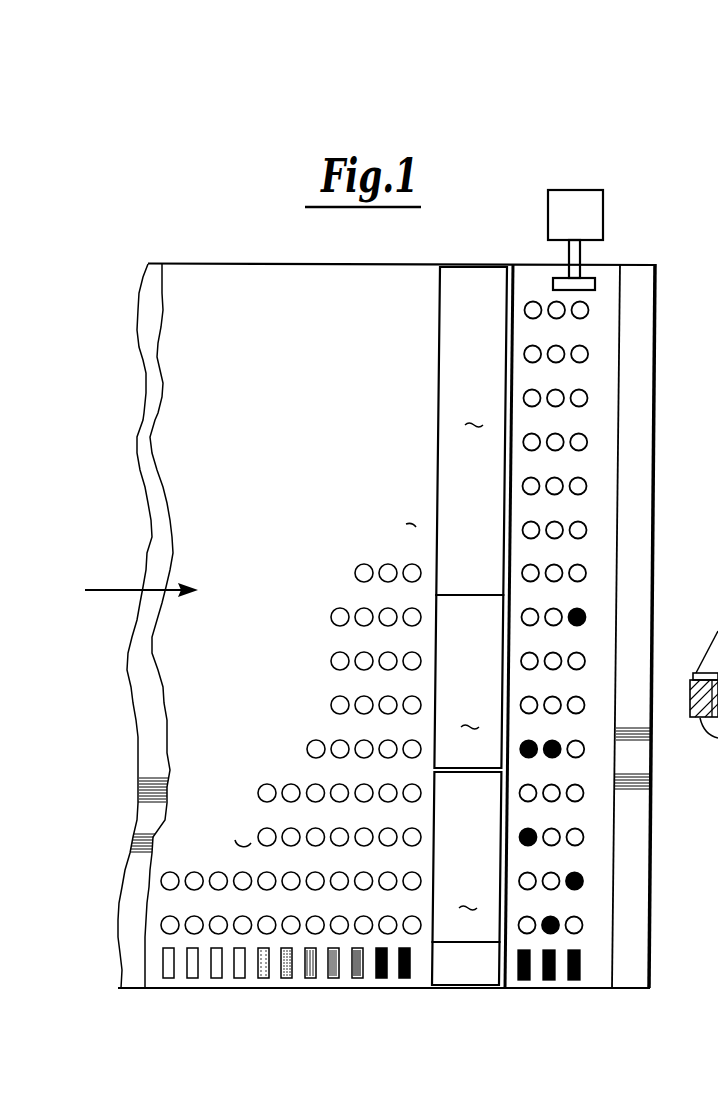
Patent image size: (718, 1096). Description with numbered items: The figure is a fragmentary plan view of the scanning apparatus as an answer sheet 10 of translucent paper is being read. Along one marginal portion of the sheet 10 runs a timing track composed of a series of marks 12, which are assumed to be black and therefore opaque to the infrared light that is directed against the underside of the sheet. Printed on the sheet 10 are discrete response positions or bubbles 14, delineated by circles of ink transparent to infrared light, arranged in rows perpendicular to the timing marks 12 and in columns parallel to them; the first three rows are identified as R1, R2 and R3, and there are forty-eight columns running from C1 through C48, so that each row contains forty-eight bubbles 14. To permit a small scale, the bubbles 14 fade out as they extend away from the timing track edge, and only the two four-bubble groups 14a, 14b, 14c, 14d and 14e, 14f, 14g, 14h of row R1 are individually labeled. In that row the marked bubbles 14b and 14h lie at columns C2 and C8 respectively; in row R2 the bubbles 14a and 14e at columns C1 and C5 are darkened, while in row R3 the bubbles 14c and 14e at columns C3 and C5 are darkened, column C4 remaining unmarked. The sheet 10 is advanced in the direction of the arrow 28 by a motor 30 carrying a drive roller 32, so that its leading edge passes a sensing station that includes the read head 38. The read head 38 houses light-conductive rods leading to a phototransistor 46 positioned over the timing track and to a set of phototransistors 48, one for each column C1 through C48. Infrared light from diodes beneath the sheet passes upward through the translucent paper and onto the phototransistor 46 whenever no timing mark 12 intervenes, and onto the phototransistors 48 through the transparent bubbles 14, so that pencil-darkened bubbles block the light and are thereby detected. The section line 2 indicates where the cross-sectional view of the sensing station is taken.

The answer sheet 10 is at (172, 393).
The arrow 28 is at (144, 590).
The read head 38 is at (450, 586).
The phototransistors 48 is at (471, 656).
The phototransistor 46 is at (464, 988).
The section line 2 is at (489, 752).
The motor 30 is at (548, 207).
The drive roller 32 is at (555, 281).
The column C48 is at (604, 308).
The response bubbles 14 is at (605, 626).
The response bubble 14a is at (582, 925).
The response bubble 14b is at (582, 881).
The response bubble 14c is at (583, 837).
The response bubble 14d is at (583, 793).
The response bubble 14e is at (584, 750).
The response bubble 14f is at (585, 706).
The response bubble 14g is at (585, 661).
The response bubble 14h is at (585, 617).
The first row R1 is at (574, 987).
The second row R2 is at (551, 987).
The third row R3 is at (526, 987).
The column C1 is at (161, 924).
The column C2 is at (161, 881).
The column C3 is at (233, 836).
The column C4 is at (257, 793).
The column C5 is at (306, 749).
The column C8 is at (330, 617).
The timing marks 12 is at (381, 990).